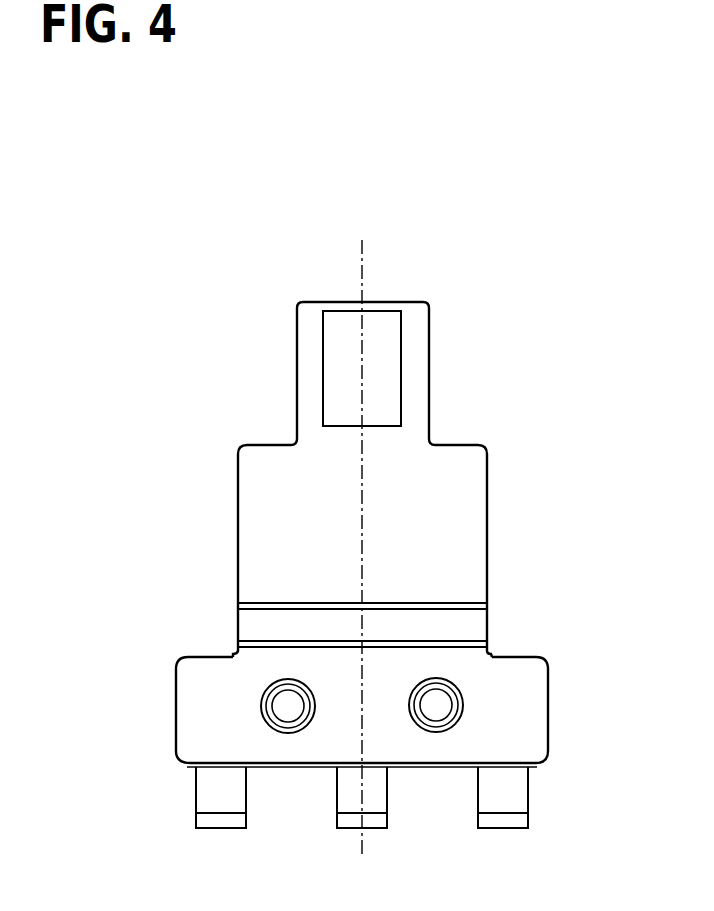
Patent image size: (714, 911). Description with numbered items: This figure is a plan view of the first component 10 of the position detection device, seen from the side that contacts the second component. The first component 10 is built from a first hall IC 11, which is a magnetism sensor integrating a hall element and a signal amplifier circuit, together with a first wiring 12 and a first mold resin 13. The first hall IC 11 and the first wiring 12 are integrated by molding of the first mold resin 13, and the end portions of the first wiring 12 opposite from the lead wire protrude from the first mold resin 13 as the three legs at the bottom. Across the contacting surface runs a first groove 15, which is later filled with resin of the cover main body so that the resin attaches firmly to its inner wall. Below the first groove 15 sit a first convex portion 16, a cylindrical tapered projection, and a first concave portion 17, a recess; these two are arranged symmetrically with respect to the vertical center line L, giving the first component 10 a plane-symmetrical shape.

The first component 10 is at (297, 283).
The first hall IC 11 is at (385, 357).
The first wiring 12 is at (225, 822).
The first mold resin 13 is at (450, 514).
The first groove 15 is at (462, 622).
The first convex portion 16 is at (284, 705).
The first concave portion 17 is at (444, 705).
The vertical center line L is at (364, 262).